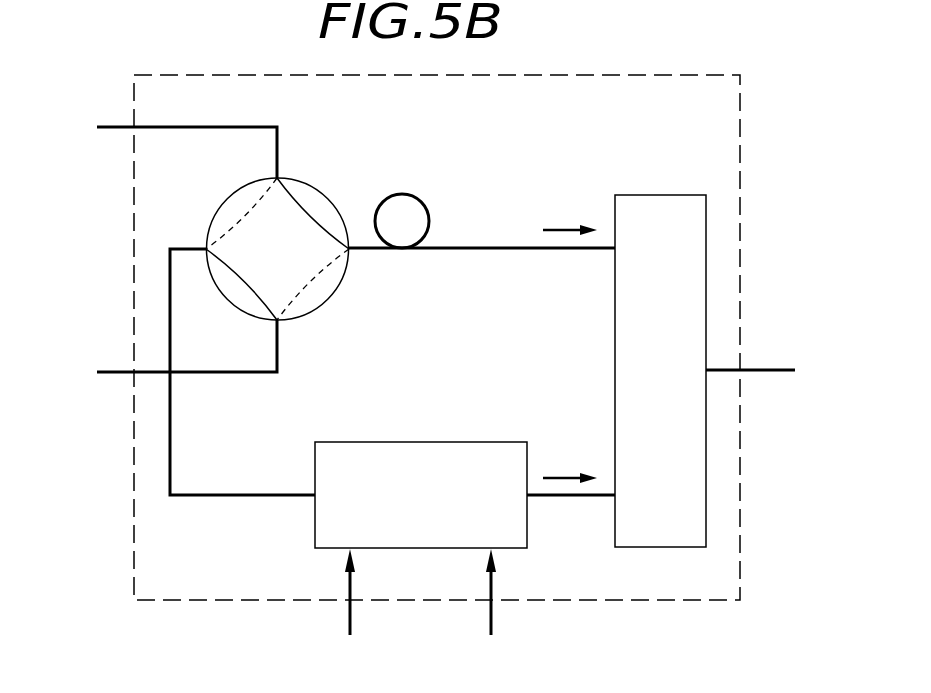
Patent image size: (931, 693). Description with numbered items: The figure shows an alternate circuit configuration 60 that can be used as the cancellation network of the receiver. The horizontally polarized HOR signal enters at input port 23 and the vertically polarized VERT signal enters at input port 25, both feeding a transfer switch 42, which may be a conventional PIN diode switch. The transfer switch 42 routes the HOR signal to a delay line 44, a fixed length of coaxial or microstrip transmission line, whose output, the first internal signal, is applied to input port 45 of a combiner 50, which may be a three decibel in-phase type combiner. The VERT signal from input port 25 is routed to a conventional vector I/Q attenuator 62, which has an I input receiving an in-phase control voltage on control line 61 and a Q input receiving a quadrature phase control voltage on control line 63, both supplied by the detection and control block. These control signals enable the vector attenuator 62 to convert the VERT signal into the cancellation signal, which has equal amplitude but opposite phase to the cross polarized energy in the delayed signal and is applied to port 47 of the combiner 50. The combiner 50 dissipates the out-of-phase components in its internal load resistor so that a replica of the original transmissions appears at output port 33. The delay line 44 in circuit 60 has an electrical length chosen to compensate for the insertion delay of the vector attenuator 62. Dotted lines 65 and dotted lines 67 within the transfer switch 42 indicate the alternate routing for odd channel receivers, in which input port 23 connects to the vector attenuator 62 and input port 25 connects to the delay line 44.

The input port 23 is at (110, 130).
The input port 25 is at (110, 376).
The output port 33 is at (763, 368).
The transfer switch 42 is at (301, 235).
The delay line 44 is at (420, 199).
The input port 45 is at (560, 252).
The port 47 is at (562, 497).
The combiner 50 is at (645, 194).
The alternate circuit configuration 60 is at (545, 74).
The control line 61 is at (352, 630).
The vector I/Q attenuator 62 is at (484, 442).
The control line 63 is at (493, 630).
The dotted lines 65 is at (256, 221).
The dotted lines 67 is at (303, 276).